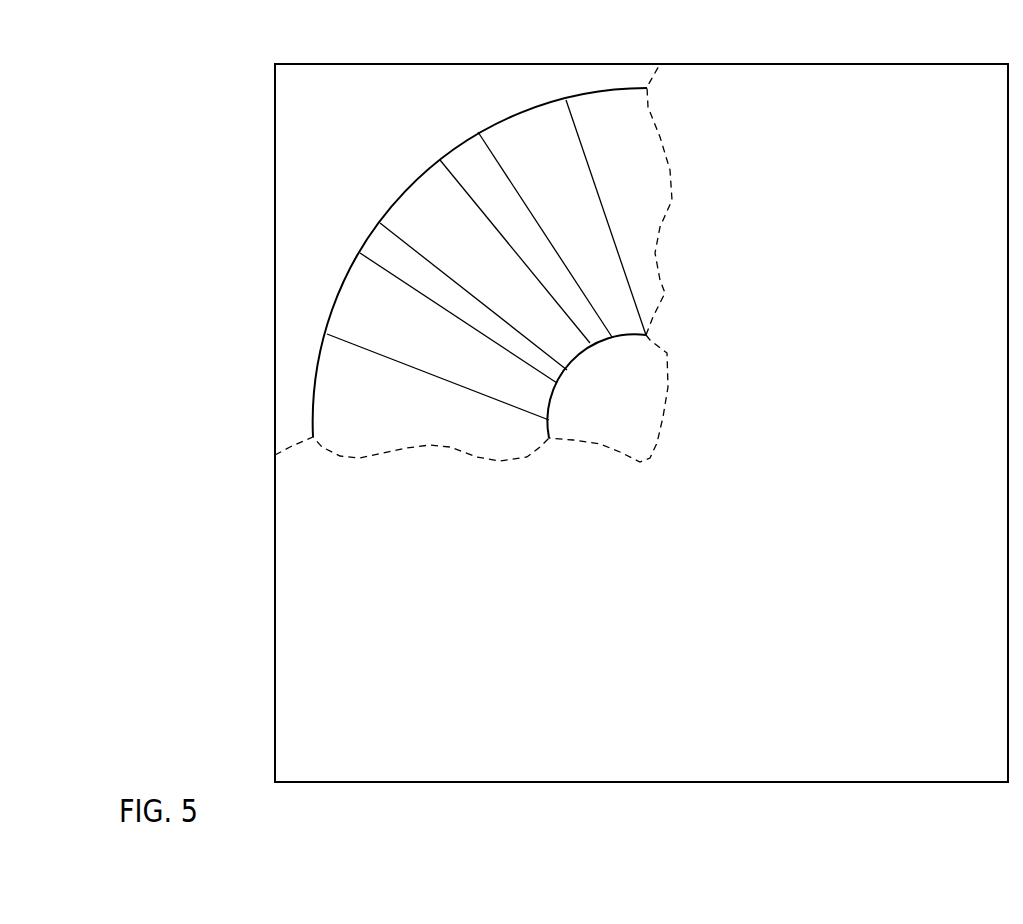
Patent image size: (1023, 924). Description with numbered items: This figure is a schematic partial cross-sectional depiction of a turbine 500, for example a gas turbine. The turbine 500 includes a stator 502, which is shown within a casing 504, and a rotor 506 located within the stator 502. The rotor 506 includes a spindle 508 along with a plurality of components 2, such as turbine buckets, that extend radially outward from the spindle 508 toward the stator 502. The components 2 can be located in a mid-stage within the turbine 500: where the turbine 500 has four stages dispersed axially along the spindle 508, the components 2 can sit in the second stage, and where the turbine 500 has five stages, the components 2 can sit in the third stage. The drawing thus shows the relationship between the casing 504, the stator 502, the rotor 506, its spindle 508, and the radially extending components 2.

The turbine 500 is at (222, 55).
The stator 502 is at (341, 103).
The casing 504 is at (858, 302).
The rotor 506 is at (471, 262).
The spindle 508 is at (648, 409).
The components 2 is at (469, 246).